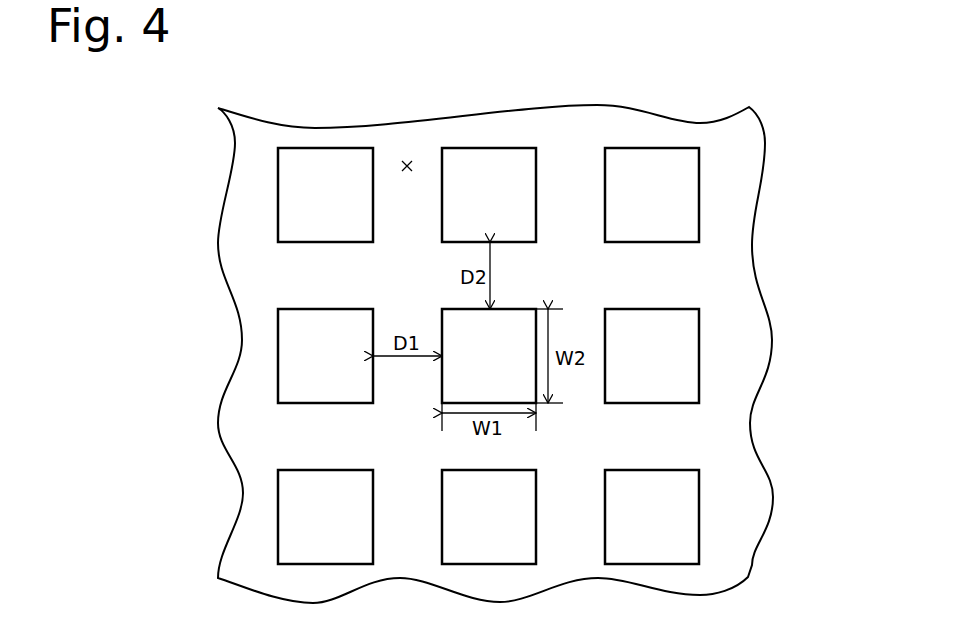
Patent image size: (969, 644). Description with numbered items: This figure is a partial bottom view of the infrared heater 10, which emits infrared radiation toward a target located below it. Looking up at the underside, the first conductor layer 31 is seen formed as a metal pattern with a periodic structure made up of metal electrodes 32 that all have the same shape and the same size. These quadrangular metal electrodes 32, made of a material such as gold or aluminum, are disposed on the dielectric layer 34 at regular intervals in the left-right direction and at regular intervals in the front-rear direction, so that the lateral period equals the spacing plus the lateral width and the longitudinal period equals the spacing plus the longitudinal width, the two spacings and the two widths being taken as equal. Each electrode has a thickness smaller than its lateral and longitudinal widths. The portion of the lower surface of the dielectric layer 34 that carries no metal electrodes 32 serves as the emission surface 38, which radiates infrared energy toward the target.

The infrared heater 10 is at (512, 328).
The first conductor layer 31 is at (637, 130).
The metal electrodes 32 is at (517, 158).
The dielectric layer 34 is at (258, 137).
The emission surface 38 is at (406, 161).